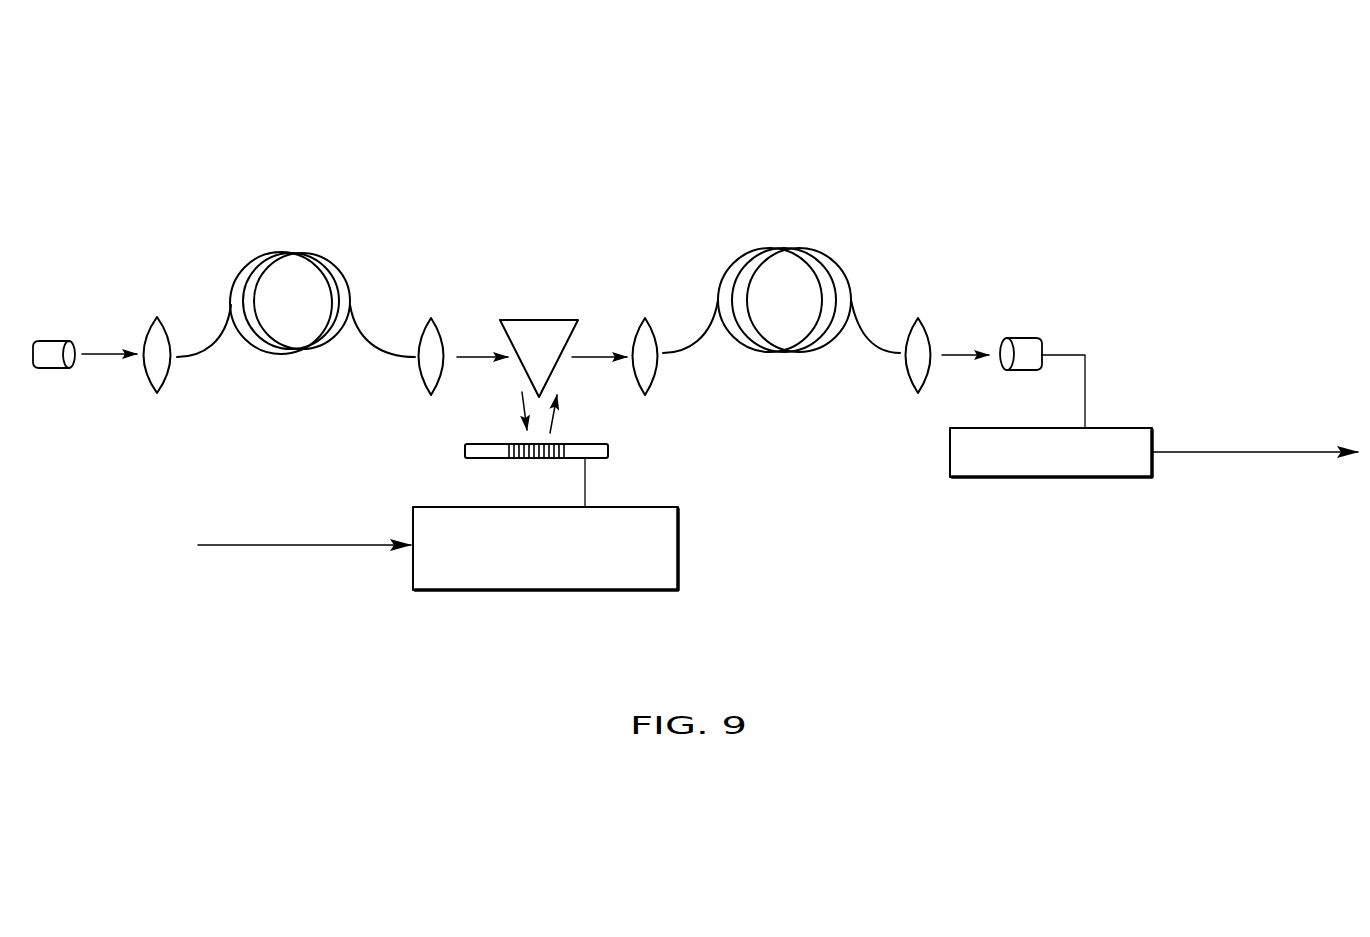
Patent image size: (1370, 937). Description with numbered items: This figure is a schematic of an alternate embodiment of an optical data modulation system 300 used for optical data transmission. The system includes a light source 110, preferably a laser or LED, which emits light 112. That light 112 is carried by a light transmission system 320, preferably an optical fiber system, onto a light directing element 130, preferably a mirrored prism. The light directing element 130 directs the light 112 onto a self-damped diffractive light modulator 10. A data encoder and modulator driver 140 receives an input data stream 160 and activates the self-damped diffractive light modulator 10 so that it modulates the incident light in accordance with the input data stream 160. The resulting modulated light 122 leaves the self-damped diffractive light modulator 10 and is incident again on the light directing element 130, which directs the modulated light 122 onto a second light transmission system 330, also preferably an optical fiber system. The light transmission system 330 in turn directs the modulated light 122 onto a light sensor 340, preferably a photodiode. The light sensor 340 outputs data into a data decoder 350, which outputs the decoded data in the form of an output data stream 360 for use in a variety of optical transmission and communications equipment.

The optical data modulation system 300 is at (562, 168).
The light source 110 is at (49, 340).
The light 112 is at (104, 355).
The light transmission system 320 is at (290, 250).
The light directing element 130 is at (530, 320).
The modulated light 122 is at (553, 423).
The self-damped diffractive light modulator 10 is at (612, 448).
The data encoder and modulator driver 140 is at (640, 592).
The input data stream 160 is at (305, 548).
The light transmission system 330 is at (785, 248).
The light sensor 340 is at (1025, 337).
The data decoder 350 is at (1002, 479).
The output data stream 360 is at (1237, 453).